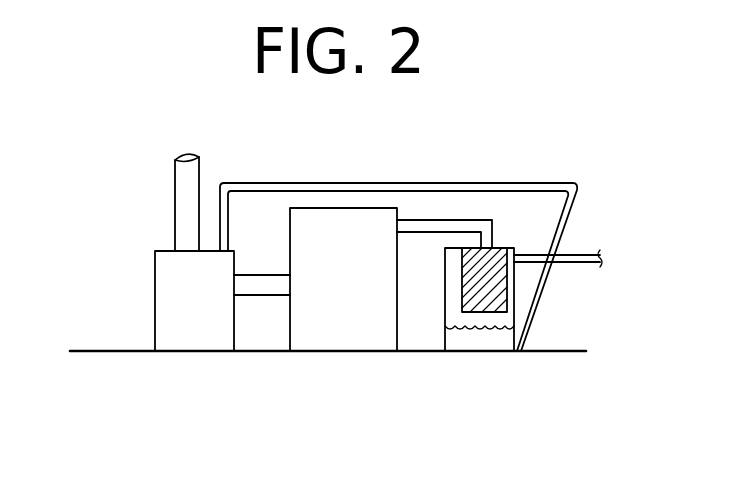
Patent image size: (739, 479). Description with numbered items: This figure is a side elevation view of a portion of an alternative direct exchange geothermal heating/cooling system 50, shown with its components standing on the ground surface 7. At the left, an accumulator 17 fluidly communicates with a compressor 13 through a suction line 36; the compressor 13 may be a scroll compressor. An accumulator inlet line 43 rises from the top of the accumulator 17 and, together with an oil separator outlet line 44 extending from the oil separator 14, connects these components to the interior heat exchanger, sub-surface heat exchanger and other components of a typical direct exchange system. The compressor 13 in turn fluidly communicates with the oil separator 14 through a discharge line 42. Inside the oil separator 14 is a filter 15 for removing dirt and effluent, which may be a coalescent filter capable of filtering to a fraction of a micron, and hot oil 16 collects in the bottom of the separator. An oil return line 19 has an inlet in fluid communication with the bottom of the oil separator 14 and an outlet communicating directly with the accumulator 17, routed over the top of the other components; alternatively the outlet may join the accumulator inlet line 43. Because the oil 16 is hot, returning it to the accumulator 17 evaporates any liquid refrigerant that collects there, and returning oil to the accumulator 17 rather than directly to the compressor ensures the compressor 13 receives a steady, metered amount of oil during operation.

The direct exchange geothermal heating/cooling system 50 is at (557, 134).
The ground surface 7 is at (120, 350).
The accumulator 17 is at (193, 323).
The accumulator inlet line 43 is at (188, 196).
The suction line 36 is at (270, 273).
The compressor 13 is at (323, 325).
The oil return line 19 is at (422, 183).
The discharge line 42 is at (458, 220).
The oil separator 14 is at (444, 303).
The filter 15 is at (478, 281).
The oil 16 is at (485, 340).
The oil separator outlet line 44 is at (573, 259).